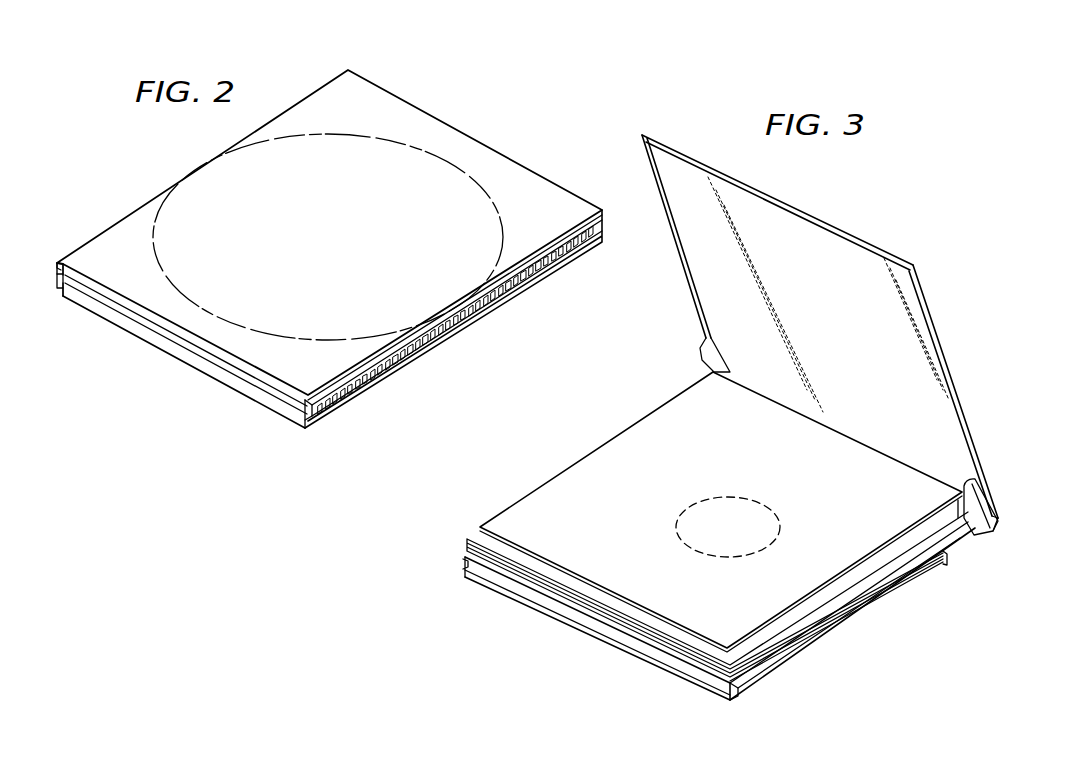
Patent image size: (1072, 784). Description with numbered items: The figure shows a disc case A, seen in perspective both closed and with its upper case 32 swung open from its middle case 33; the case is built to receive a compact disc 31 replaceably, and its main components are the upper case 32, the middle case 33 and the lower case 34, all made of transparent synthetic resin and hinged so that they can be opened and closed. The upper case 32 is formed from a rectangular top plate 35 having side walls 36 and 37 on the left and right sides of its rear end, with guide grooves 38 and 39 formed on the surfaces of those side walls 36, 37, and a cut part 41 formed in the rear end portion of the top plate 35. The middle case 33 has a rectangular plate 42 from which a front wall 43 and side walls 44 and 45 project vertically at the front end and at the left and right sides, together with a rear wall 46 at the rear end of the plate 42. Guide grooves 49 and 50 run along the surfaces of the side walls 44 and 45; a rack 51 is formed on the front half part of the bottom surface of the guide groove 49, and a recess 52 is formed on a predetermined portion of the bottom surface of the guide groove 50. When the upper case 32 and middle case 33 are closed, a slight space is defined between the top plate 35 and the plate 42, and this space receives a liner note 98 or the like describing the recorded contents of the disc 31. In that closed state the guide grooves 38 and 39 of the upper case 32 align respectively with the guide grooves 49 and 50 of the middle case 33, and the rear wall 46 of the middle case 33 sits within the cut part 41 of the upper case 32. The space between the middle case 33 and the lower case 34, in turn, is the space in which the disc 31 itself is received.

In FIG. 2, the disc case A is at (527, 169).
In FIG. 3, the disc case A is at (977, 334).
In FIG. 2, the disc 31 is at (370, 130).
In FIG. 2, the upper case 32 is at (150, 212).
In FIG. 3, the upper case 32 is at (955, 375).
In FIG. 2, the middle case 33 is at (180, 330).
In FIG. 3, the middle case 33 is at (607, 635).
In FIG. 2, the lower case 34 is at (205, 366).
In FIG. 2, the top plate 35 is at (452, 150).
In FIG. 3, the top plate 35 is at (810, 218).
In FIG. 2, the side wall 36 is at (340, 416).
In FIG. 3, the side wall 36 is at (700, 362).
In FIG. 2, the side wall 37 is at (57, 289).
In FIG. 3, the side wall 37 is at (985, 534).
In FIG. 2, the guide groove 38 is at (316, 420).
In FIG. 2, the guide groove 39 is at (59, 272).
In FIG. 3, the guide groove 39 is at (995, 522).
In FIG. 2, the cut part 41 is at (80, 303).
In FIG. 3, the plate 42 is at (820, 612).
In FIG. 3, the front wall 43 is at (648, 655).
In FIG. 2, the side wall 44 is at (440, 340).
In FIG. 3, the side wall 44 is at (470, 548).
In FIG. 3, the side wall 45 is at (775, 680).
In FIG. 2, the rear wall 46 is at (122, 312).
In FIG. 3, the rear wall 46 is at (960, 515).
In FIG. 2, the guide groove 49 is at (470, 320).
In FIG. 3, the guide groove 49 is at (462, 562).
In FIG. 3, the guide groove 50 is at (750, 700).
In FIG. 2, the rack 51 is at (550, 262).
In FIG. 3, the recess 52 is at (870, 612).
In FIG. 3, the liner note 98 is at (612, 450).